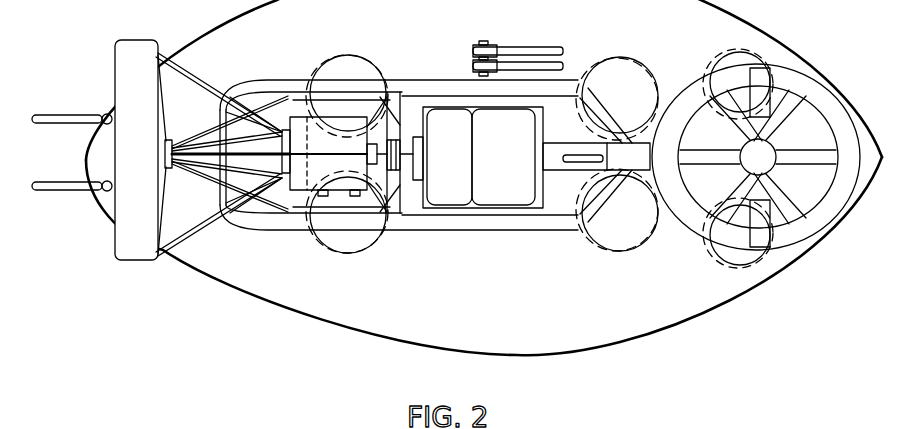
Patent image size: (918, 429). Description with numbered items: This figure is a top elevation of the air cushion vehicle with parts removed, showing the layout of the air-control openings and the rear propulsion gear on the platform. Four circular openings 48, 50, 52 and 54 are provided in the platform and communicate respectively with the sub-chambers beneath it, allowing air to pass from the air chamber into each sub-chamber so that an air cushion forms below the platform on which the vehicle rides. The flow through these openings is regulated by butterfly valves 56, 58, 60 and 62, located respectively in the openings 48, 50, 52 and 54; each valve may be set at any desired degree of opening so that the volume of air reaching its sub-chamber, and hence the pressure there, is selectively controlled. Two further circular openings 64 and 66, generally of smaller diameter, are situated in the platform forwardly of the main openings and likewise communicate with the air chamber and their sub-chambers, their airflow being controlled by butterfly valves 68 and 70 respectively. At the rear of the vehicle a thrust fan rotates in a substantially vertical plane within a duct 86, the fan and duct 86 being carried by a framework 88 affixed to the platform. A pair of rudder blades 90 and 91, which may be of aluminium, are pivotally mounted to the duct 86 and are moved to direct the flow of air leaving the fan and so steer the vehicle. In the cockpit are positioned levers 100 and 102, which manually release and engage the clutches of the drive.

The circular opening 48 is at (640, 250).
The circular opening 50 is at (357, 247).
The circular opening 52 is at (327, 57).
The circular opening 54 is at (612, 57).
The butterfly valve 56 is at (608, 233).
The butterfly valve 58 is at (322, 245).
The butterfly valve 60 is at (357, 68).
The butterfly valve 62 is at (633, 80).
The further circular opening 64 is at (760, 260).
The further circular opening 66 is at (725, 53).
The butterfly valve 68 is at (735, 257).
The butterfly valve 70 is at (752, 60).
The duct 86 is at (132, 262).
The framework 88 is at (217, 92).
The rudder blade 90 is at (60, 114).
The rudder blade 91 is at (62, 191).
The lever 100 is at (540, 47).
The lever 102 is at (507, 50).